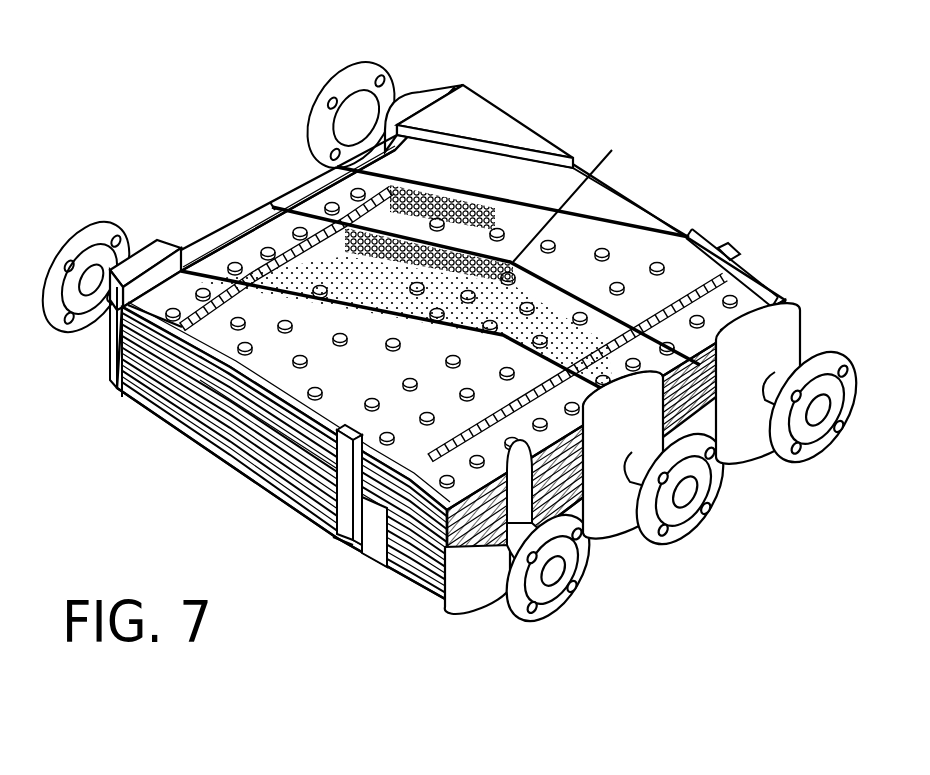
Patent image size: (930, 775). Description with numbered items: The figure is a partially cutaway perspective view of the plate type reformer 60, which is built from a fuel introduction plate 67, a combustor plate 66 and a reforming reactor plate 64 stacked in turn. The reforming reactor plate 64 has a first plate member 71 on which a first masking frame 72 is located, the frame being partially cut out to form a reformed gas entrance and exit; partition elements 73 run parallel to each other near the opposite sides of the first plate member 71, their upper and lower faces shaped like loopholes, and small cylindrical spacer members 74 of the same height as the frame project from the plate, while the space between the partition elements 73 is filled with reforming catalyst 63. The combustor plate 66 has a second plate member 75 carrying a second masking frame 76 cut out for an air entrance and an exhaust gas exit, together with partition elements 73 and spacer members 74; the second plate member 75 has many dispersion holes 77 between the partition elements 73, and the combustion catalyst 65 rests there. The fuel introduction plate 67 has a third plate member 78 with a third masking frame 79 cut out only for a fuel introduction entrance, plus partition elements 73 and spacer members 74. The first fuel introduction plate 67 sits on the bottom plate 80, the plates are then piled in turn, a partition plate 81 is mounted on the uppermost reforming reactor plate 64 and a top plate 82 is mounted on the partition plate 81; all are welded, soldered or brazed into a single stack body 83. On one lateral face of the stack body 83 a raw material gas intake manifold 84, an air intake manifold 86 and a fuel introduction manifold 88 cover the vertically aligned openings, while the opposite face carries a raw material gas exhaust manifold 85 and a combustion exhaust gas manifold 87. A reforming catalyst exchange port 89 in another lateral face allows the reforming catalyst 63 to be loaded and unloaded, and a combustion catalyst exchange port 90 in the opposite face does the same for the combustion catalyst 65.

The plate type reformer 60 is at (485, 82).
The reforming catalyst 63 is at (512, 202).
The reforming reactor plate 64 is at (568, 240).
The combustion catalyst 65 is at (576, 232).
The combustor plate 66 is at (350, 292).
The fuel introduction plate 67 is at (290, 507).
The first plate member 71 is at (636, 250).
The first masking frame 72 is at (782, 287).
The partition elements 73 is at (258, 285).
The spacer members 74 is at (330, 270).
The second plate member 75 is at (298, 262).
The second masking frame 76 is at (208, 248).
The dispersion holes 77 is at (415, 298).
The third plate member 78 is at (205, 453).
The third masking frame 79 is at (112, 366).
The bottom plate 80 is at (443, 603).
The partition plate 81 is at (500, 173).
The top plate 82 is at (502, 122).
The stack body 83 is at (310, 530).
The raw material gas intake manifold 84 is at (790, 348).
The raw material gas exhaust manifold 85 is at (140, 247).
The air intake manifold 86 is at (483, 593).
The combustion exhaust gas manifold 87 is at (410, 100).
The fuel introduction manifold 88 is at (617, 523).
The reforming catalyst exchange port 89 is at (700, 232).
The combustion catalyst exchange port 90 is at (362, 532).